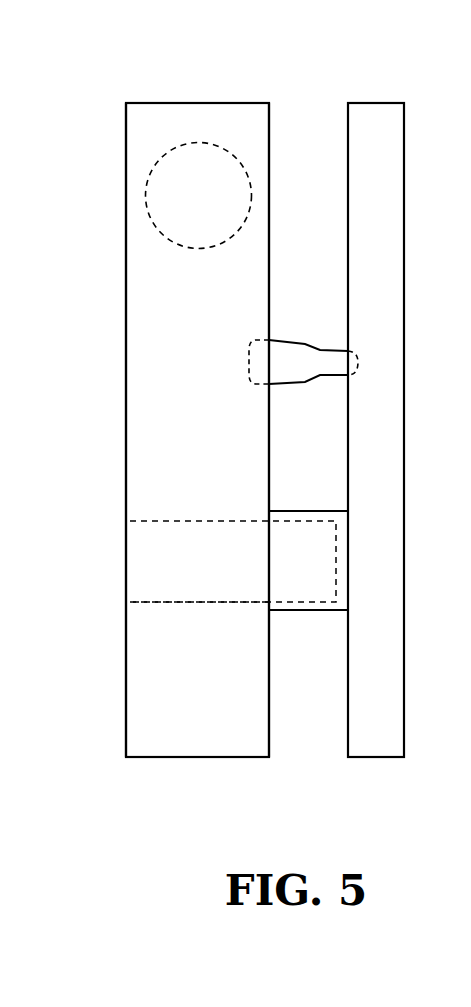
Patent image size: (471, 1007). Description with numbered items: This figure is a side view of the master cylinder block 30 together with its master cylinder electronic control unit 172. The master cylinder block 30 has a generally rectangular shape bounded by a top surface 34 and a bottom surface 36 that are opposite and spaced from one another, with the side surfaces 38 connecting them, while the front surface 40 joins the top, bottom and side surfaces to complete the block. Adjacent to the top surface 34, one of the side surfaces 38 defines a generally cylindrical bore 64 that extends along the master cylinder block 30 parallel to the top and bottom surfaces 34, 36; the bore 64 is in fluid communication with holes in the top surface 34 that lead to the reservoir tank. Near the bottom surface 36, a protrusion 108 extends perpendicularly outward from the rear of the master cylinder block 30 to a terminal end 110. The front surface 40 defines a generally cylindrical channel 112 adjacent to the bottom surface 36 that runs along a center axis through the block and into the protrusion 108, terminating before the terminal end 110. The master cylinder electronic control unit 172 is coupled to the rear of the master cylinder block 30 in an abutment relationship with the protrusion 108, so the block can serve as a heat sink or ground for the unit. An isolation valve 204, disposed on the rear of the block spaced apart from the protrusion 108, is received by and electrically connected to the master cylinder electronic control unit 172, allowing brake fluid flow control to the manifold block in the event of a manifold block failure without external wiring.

The master cylinder block 30 is at (279, 121).
The top surface 34 is at (207, 102).
The bottom surface 36 is at (185, 758).
The side surfaces 38 is at (145, 308).
The front surface 40 is at (268, 238).
The bore 64 is at (148, 202).
The protrusion 108 is at (308, 613).
The terminal end 110 is at (350, 549).
The channel 112 is at (165, 602).
The master cylinder electronic control unit 172 is at (390, 440).
The isolation valve 204 is at (323, 358).